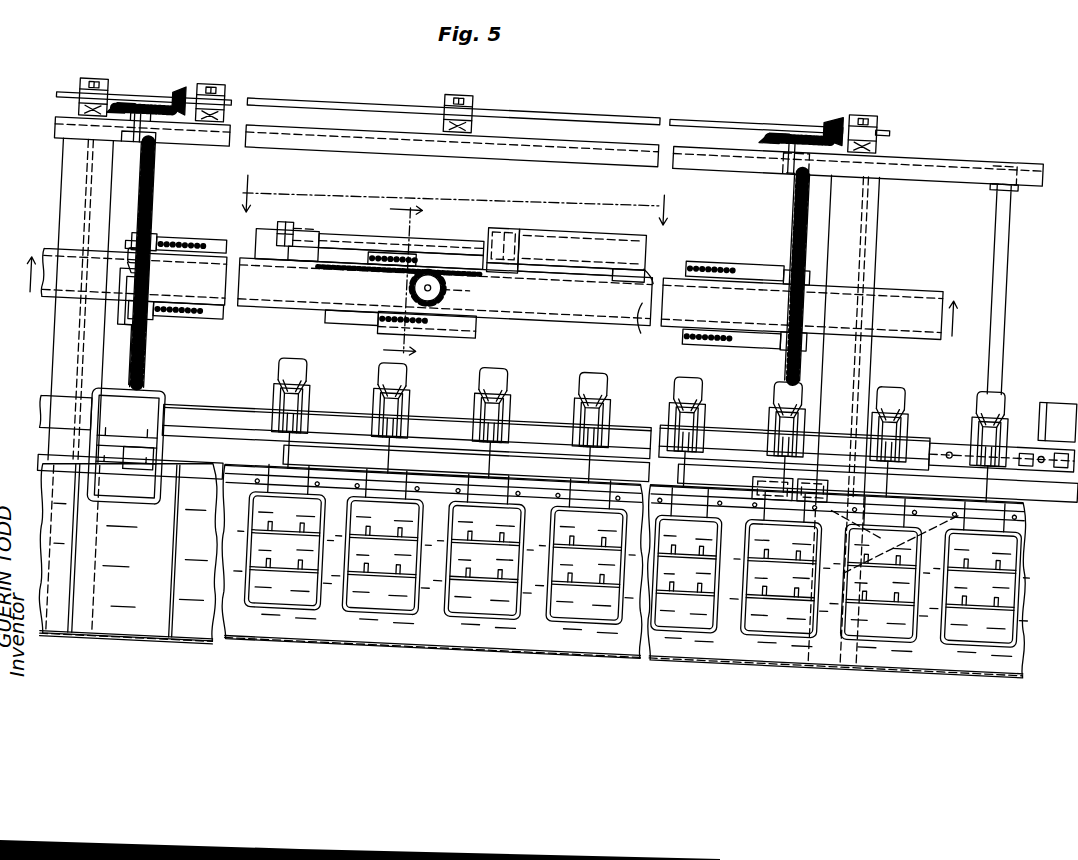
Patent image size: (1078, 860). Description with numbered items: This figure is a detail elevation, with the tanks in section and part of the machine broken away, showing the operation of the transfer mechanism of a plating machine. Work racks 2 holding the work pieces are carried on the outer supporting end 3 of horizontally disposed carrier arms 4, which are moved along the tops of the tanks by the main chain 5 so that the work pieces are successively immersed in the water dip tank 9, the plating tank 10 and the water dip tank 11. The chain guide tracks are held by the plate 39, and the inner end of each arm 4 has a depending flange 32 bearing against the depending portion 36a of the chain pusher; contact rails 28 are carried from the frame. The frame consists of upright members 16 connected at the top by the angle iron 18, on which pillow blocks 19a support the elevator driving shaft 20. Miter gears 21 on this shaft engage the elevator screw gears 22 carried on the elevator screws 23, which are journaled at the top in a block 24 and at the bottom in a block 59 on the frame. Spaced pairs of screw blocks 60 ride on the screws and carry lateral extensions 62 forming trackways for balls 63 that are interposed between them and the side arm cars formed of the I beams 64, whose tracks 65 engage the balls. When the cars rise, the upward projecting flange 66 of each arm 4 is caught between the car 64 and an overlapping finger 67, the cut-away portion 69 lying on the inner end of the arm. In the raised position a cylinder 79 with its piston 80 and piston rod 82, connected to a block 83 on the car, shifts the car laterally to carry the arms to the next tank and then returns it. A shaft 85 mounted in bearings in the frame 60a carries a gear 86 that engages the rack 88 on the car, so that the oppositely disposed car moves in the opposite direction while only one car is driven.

The work rack 2 is at (376, 598).
The outer supporting end 3 is at (306, 440).
The carrier arm 4 is at (270, 368).
The main chain 5 is at (972, 406).
The water dip tank 9 is at (150, 650).
The plating tank 10 is at (540, 628).
The water dip tank 11 is at (391, 275).
The upright members 16 is at (72, 339).
The angle iron 18 is at (62, 124).
The pillow blocks 19a is at (448, 75).
The elevator driving shaft 20 is at (546, 86).
The miter gears 21 is at (182, 76).
The elevator screw gears 22 is at (147, 99).
The elevator screws 23 is at (166, 159).
The block 24 is at (788, 138).
The contact rails 28 is at (752, 404).
The depending flange 32 is at (318, 394).
The depending portion 36a is at (170, 403).
The plate 39 is at (558, 404).
The block 59 is at (184, 442).
The screw blocks 60 is at (168, 226).
The frame 60a is at (480, 316).
The lateral extensions 62 is at (224, 230).
The balls 63 is at (186, 310).
The I beams 64 is at (590, 288).
The tracks 65 is at (132, 235).
The upward projecting flange 66 is at (165, 264).
The overlapping finger 67 is at (166, 246).
The cut-away portion 69 is at (1048, 407).
The cylinder 79 is at (618, 215).
The piston 80 is at (526, 212).
The piston rod 82 is at (470, 216).
The block 83 is at (294, 221).
The shaft 85 is at (427, 270).
The gear 86 is at (468, 290).
The rack 88 is at (352, 256).